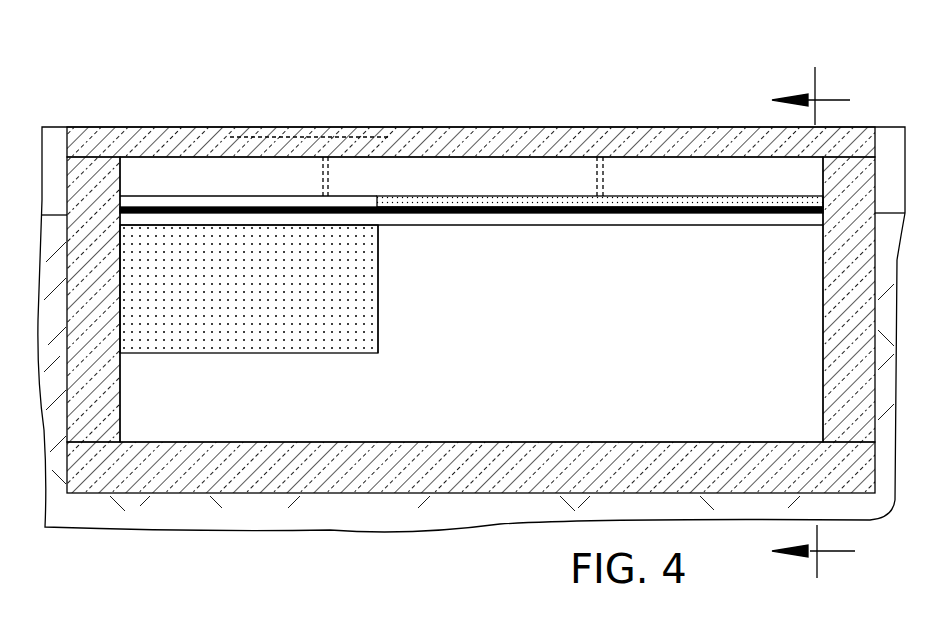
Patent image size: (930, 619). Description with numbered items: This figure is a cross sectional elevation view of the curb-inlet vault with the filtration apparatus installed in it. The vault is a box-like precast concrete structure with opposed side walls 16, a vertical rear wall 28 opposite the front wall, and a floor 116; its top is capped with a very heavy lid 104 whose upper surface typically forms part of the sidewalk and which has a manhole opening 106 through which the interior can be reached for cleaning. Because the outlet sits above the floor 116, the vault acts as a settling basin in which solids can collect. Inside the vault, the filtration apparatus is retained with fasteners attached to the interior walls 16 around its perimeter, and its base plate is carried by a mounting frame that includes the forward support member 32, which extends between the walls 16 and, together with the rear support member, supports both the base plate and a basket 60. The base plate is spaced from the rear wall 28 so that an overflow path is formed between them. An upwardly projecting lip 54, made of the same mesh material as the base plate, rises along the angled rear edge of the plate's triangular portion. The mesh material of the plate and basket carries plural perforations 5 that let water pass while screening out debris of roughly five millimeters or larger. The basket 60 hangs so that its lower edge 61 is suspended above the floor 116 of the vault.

The perforations 5 is at (333, 373).
The side walls 16 is at (118, 373).
The rear wall 28 is at (550, 349).
The forward support member 32 is at (637, 220).
The upwardly projecting lip 54 is at (653, 196).
The basket 60 is at (396, 292).
The lower edge 61 is at (257, 353).
The lid 104 is at (510, 127).
The manhole opening 106 is at (308, 127).
The floor 116 is at (427, 442).